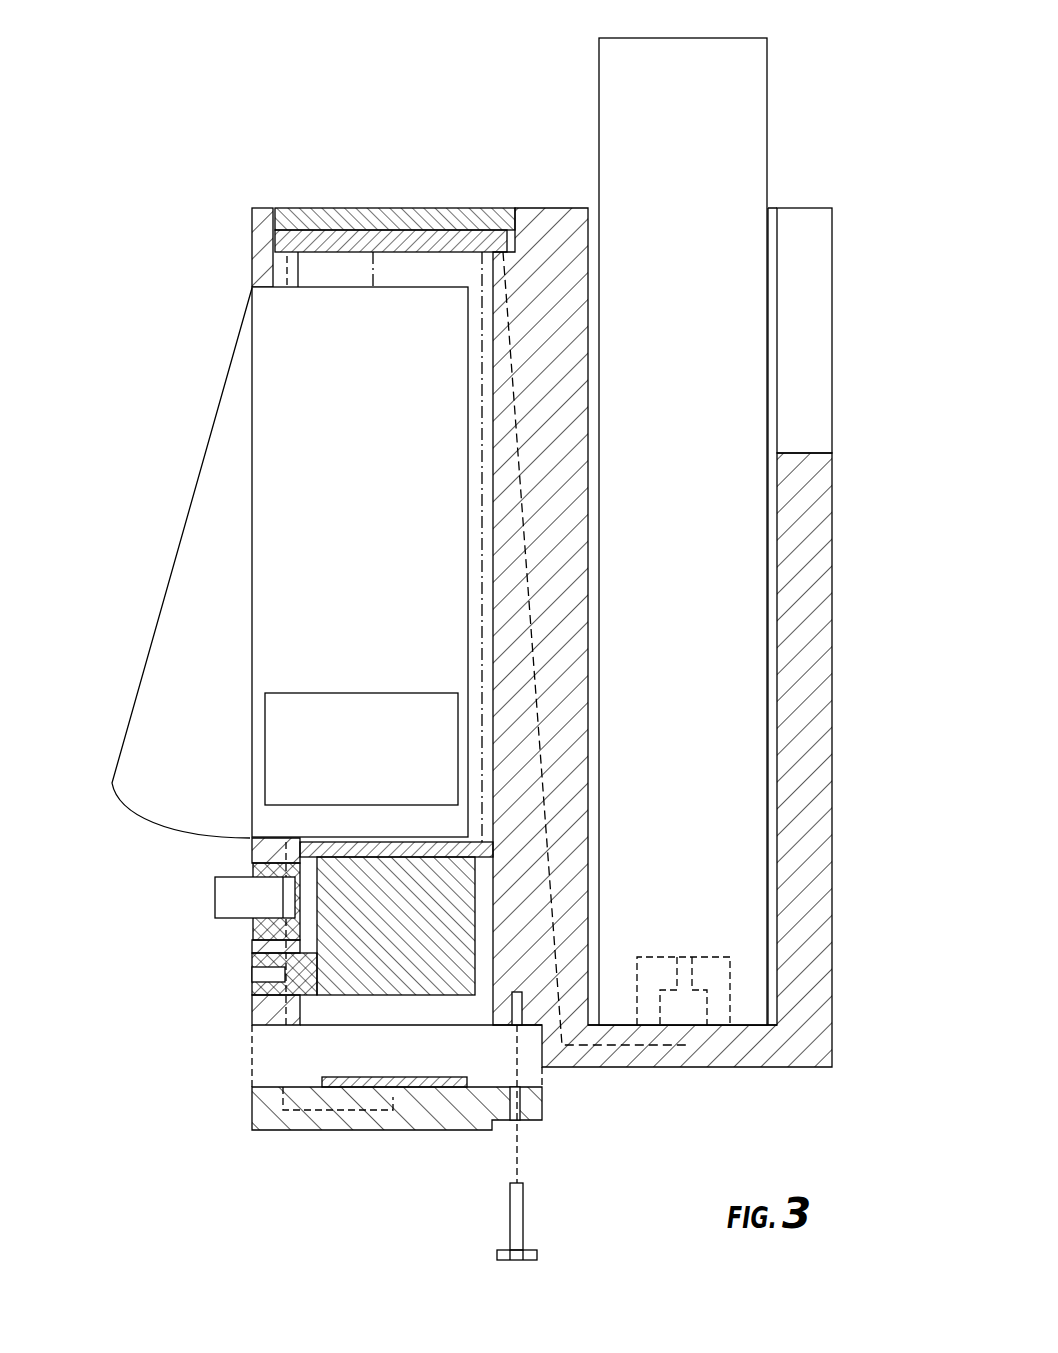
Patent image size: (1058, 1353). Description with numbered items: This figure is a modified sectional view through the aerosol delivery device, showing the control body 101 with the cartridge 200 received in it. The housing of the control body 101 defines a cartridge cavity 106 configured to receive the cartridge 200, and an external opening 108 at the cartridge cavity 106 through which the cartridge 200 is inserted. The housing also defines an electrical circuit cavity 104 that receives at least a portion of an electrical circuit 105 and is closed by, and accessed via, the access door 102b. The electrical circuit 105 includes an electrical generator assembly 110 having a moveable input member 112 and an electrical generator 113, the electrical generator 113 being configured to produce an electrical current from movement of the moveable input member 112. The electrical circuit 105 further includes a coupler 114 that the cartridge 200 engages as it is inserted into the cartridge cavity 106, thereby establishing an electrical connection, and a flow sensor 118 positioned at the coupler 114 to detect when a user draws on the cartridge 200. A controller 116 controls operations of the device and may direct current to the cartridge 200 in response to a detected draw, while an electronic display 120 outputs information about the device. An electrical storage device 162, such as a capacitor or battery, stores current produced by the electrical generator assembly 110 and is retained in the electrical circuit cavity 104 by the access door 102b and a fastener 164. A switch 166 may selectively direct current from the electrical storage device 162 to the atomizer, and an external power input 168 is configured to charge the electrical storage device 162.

The control body 101 is at (238, 46).
The cartridge 200 is at (598, 100).
The external opening 108 is at (596, 207).
The cartridge cavity 106 is at (770, 677).
The controller 116 is at (410, 212).
The electronic display 120 is at (345, 208).
The electrical circuit cavity 104 is at (312, 272).
The electrical generator assembly 110 is at (218, 372).
The moveable input member 112 is at (193, 490).
The electrical generator 113 is at (303, 693).
The switch 166 is at (215, 893).
The external power input 168 is at (250, 973).
The electrical storage device 162 is at (350, 997).
The electrical circuit 105 is at (408, 1008).
The access door 102b is at (250, 1110).
The fastener 164 is at (523, 1210).
The coupler 114 is at (730, 970).
The flow sensor 118 is at (693, 1026).